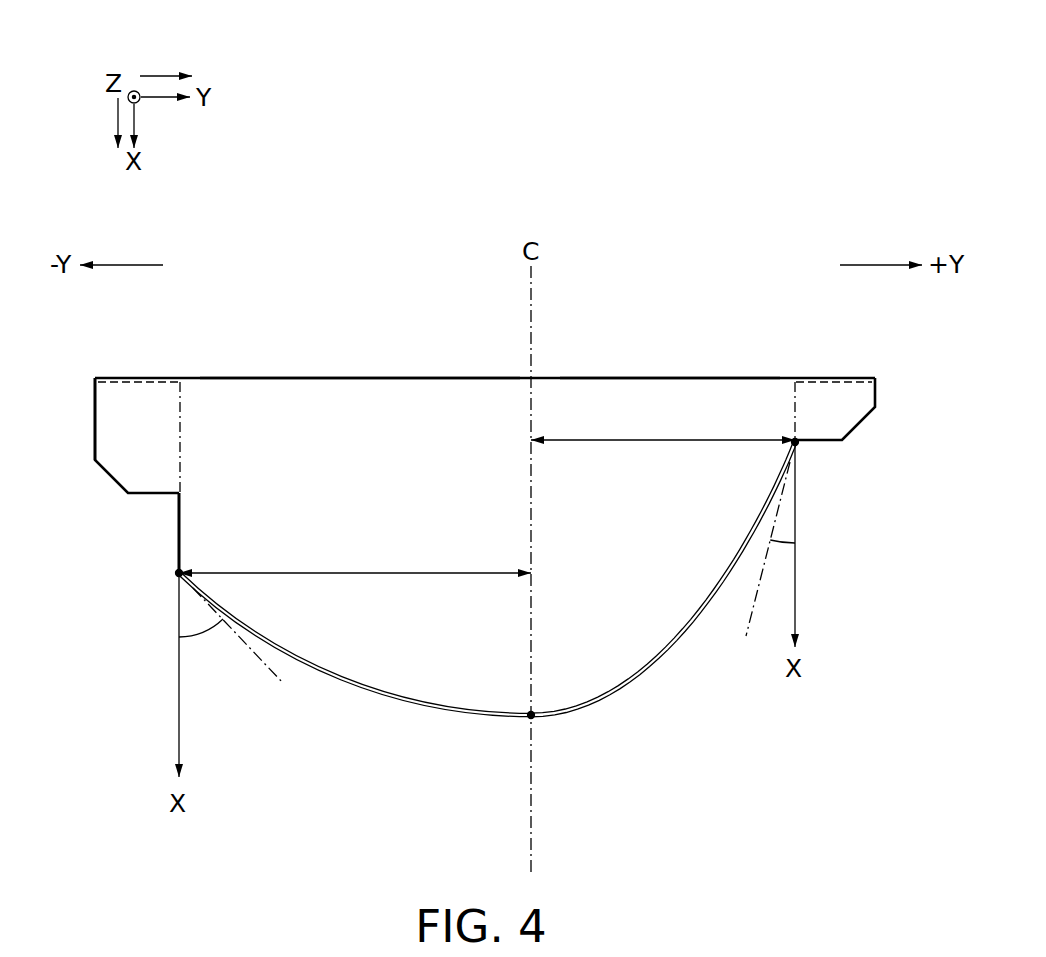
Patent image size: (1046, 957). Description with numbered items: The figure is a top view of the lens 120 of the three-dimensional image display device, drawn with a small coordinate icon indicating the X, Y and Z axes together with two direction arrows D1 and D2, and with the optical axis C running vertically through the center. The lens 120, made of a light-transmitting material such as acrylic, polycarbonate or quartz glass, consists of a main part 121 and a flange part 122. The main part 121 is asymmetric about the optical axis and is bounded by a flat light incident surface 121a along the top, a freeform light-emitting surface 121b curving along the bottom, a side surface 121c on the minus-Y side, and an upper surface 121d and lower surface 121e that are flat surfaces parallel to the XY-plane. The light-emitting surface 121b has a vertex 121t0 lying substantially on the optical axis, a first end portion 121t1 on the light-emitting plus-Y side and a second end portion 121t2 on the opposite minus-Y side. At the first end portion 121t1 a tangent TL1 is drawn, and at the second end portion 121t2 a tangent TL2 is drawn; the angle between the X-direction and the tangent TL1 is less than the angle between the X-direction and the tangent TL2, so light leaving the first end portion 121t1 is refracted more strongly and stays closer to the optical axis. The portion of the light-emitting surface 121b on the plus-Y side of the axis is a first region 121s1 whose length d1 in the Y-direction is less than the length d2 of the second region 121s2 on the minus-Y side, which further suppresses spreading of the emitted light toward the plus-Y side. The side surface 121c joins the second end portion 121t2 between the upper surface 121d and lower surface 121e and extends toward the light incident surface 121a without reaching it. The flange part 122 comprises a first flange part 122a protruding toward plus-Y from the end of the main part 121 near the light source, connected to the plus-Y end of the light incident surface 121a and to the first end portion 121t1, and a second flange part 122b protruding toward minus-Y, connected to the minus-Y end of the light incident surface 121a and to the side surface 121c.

The first direction D1 is at (163, 75).
The second direction D2 is at (117, 115).
The lens 120 is at (211, 224).
The main part 121 is at (474, 427).
The light incident surface 121a is at (320, 378).
The light-emitting surface 121b is at (354, 687).
The side surface 121c is at (177, 537).
The upper surface 121d is at (660, 407).
The lower surface 121e is at (742, 407).
The first region 121s1 is at (653, 674).
The second region 121s2 is at (398, 696).
The vertex 121t0 is at (527, 720).
The first end portion 121t1 is at (800, 445).
The second end portion 121t2 is at (175, 577).
The flange part 122 is at (111, 389).
The first flange part 122a is at (876, 398).
The second flange part 122b is at (96, 399).
The length in the Y-direction of the first region d1 is at (593, 440).
The length in the Y-direction of the second region d2 is at (243, 570).
The tangent at the first end portion TL1 is at (747, 622).
The tangent at the second end portion TL2 is at (278, 677).